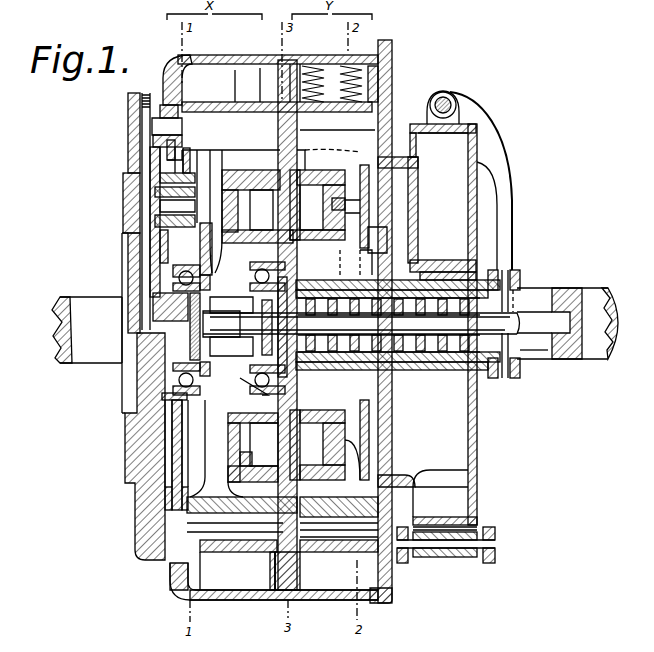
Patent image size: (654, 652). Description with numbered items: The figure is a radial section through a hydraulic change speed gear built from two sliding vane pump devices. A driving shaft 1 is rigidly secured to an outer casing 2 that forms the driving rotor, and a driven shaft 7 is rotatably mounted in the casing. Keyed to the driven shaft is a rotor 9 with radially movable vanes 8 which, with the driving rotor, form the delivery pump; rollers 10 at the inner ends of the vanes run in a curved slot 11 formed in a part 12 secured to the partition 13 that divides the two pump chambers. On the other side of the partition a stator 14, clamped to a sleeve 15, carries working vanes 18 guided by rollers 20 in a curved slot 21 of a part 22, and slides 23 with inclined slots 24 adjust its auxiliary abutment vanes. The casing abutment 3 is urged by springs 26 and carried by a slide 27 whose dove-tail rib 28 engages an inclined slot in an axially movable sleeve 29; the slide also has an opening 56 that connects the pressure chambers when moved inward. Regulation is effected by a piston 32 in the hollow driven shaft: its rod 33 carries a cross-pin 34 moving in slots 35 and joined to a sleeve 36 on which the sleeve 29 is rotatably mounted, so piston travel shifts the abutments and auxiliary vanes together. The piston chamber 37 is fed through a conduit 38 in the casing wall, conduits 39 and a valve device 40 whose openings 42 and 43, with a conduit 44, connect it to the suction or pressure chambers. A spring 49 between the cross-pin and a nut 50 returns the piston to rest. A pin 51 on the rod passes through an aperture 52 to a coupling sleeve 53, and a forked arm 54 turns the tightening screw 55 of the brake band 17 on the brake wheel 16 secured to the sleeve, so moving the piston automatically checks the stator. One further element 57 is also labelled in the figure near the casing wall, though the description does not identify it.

The driving shaft 1 is at (87, 330).
The outer casing 2 is at (180, 68).
The abutment 3 is at (340, 106).
The driven shaft 7 is at (567, 323).
The radially movable vanes 8 is at (185, 118).
The rotor 9 is at (148, 252).
The rollers 10 is at (222, 168).
The curved slot 11 is at (233, 447).
The part 12 is at (220, 460).
The partition 13 is at (276, 568).
The stator 14 is at (357, 205).
The sleeve 15 is at (422, 262).
The brake wheel 16 is at (478, 190).
The brake band 17 is at (445, 548).
The working vanes 18 is at (271, 154).
The rollers 20 is at (347, 195).
The curved slot 21 is at (342, 468).
The part 22 is at (340, 180).
The slides 23 is at (375, 270).
The slots 24 is at (392, 258).
The springs 26 is at (312, 80).
The slides 27 is at (278, 122).
The dove-tail formed rib 28 is at (264, 230).
The axially movable sleeve 29 is at (283, 268).
The piston 32 is at (231, 306).
The piston rod 33 is at (231, 347).
The cross-pin 34 is at (361, 325).
The slots 35 is at (304, 292).
The sleeve 36 is at (262, 385).
The piston chamber 37 is at (153, 358).
The conduit 38 is at (138, 362).
The conduits 39 is at (215, 245).
The valve device 40 is at (138, 207).
The openings 42 is at (155, 230).
The openings 43 is at (147, 193).
The conduit 44 is at (160, 127).
The spring 49 is at (416, 405).
The nut 50 is at (430, 271).
The pin 51 is at (504, 380).
The aperture 52 is at (535, 352).
The coupling sleeve 53 is at (521, 280).
The forked arm 54 is at (508, 226).
The tightening screw 55 is at (450, 100).
The opening 56 is at (275, 62).
The stud 57 is at (177, 158).